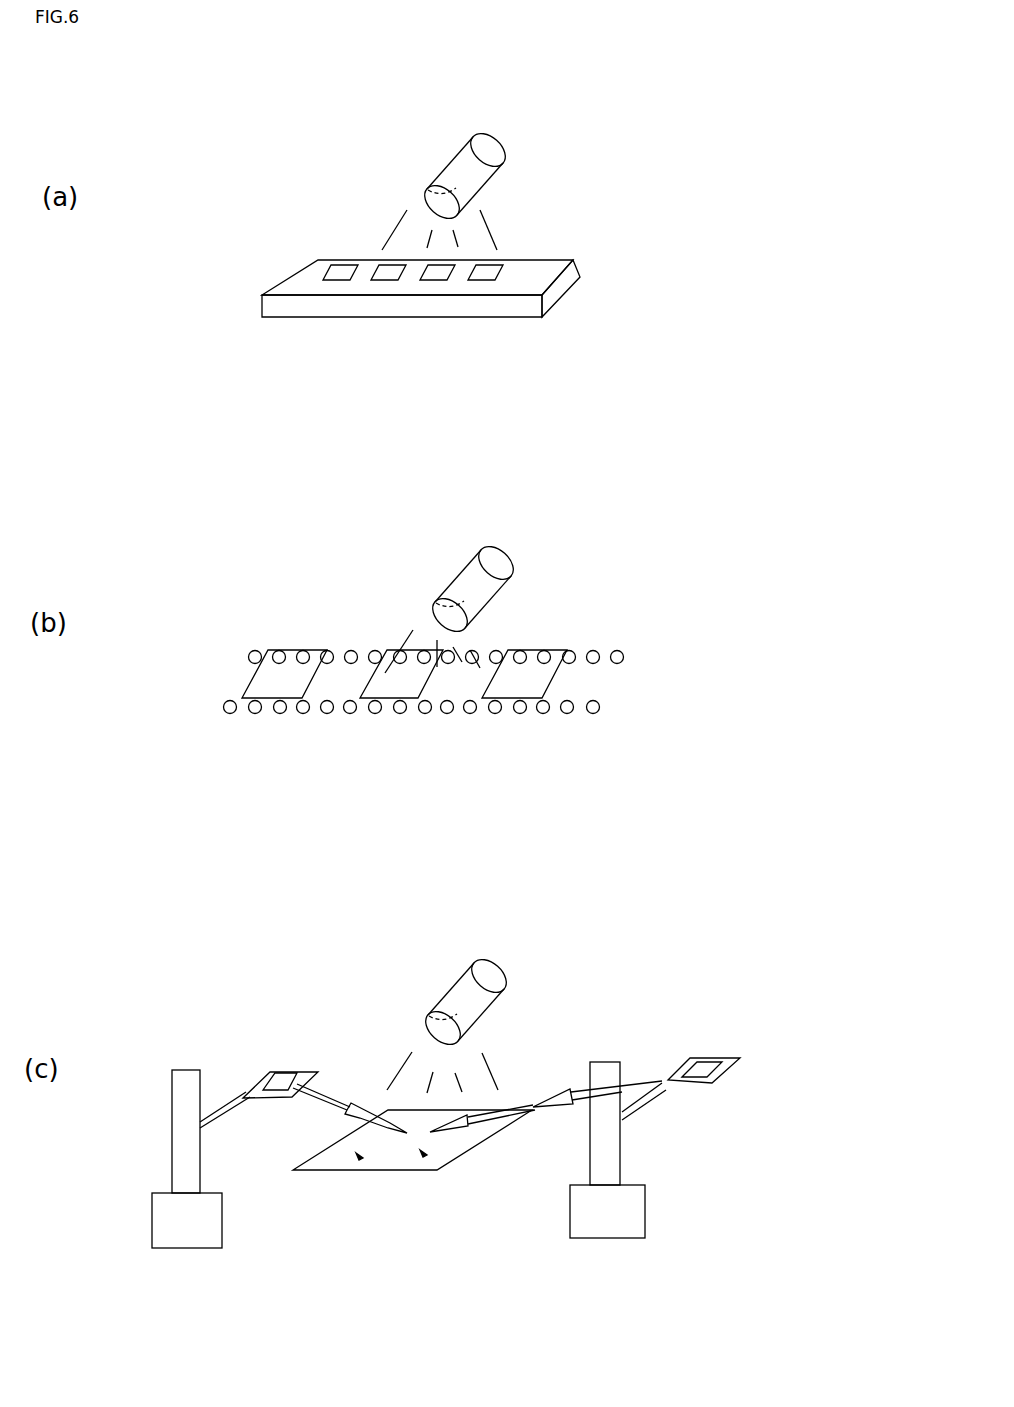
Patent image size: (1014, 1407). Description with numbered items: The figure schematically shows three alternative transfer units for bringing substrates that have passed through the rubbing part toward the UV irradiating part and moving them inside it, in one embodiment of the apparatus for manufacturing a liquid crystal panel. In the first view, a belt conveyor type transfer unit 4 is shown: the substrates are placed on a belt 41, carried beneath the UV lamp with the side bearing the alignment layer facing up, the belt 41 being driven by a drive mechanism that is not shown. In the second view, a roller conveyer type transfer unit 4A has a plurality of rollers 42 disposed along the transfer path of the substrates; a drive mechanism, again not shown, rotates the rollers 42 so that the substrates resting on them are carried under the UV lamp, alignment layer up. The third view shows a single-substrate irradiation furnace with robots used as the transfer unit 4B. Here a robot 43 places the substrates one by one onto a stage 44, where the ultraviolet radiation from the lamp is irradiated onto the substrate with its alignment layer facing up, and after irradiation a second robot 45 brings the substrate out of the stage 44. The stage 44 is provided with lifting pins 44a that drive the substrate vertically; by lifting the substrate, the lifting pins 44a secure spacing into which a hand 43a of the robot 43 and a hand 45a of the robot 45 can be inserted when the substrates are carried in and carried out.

The belt conveyor type transfer unit 4 is at (495, 243).
The roller conveyer type transfer unit 4A is at (464, 683).
The transfer unit 4B is at (500, 1162).
The belt 41 is at (552, 263).
The rollers 42 is at (598, 707).
The robot 43 is at (190, 1250).
The hand 43a is at (232, 1112).
The stage 44 is at (462, 1142).
The lifting pins 44a is at (360, 1155).
The robot 45 is at (607, 1240).
The hand 45a is at (657, 1093).